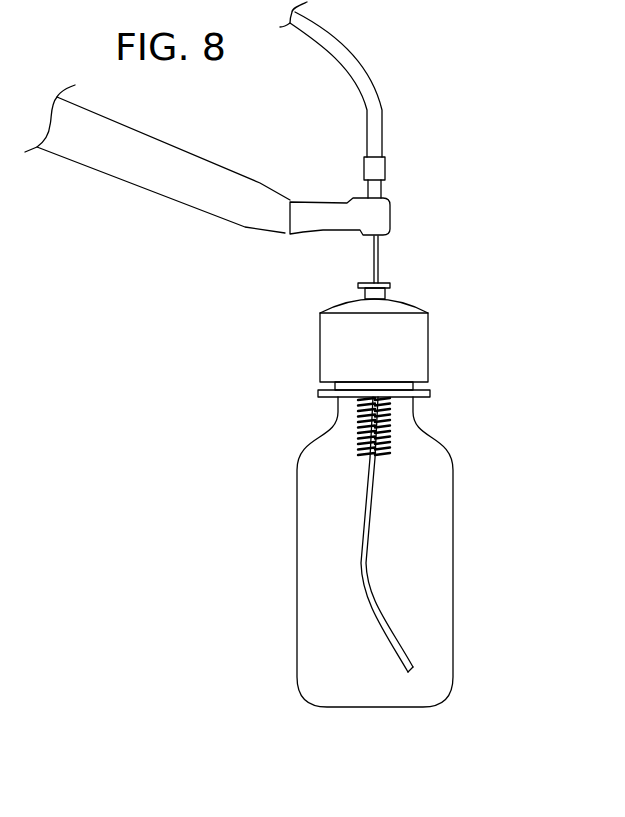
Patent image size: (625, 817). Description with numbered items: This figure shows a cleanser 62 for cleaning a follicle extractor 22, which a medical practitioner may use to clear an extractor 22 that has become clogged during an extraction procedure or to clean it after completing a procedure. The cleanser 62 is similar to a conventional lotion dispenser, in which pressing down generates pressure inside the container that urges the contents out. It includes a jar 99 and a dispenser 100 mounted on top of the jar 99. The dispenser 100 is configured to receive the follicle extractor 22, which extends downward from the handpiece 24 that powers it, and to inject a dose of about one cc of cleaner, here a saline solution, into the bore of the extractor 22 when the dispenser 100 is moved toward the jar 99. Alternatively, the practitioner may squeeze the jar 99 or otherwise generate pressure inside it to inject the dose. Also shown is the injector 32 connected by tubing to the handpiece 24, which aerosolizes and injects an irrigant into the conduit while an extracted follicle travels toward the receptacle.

The handpiece 24 is at (182, 153).
The injector 32 is at (381, 170).
The follicle extractor 22 is at (374, 260).
The dispenser 100 is at (392, 286).
The cleanser 62 is at (371, 503).
The jar 99 is at (453, 552).